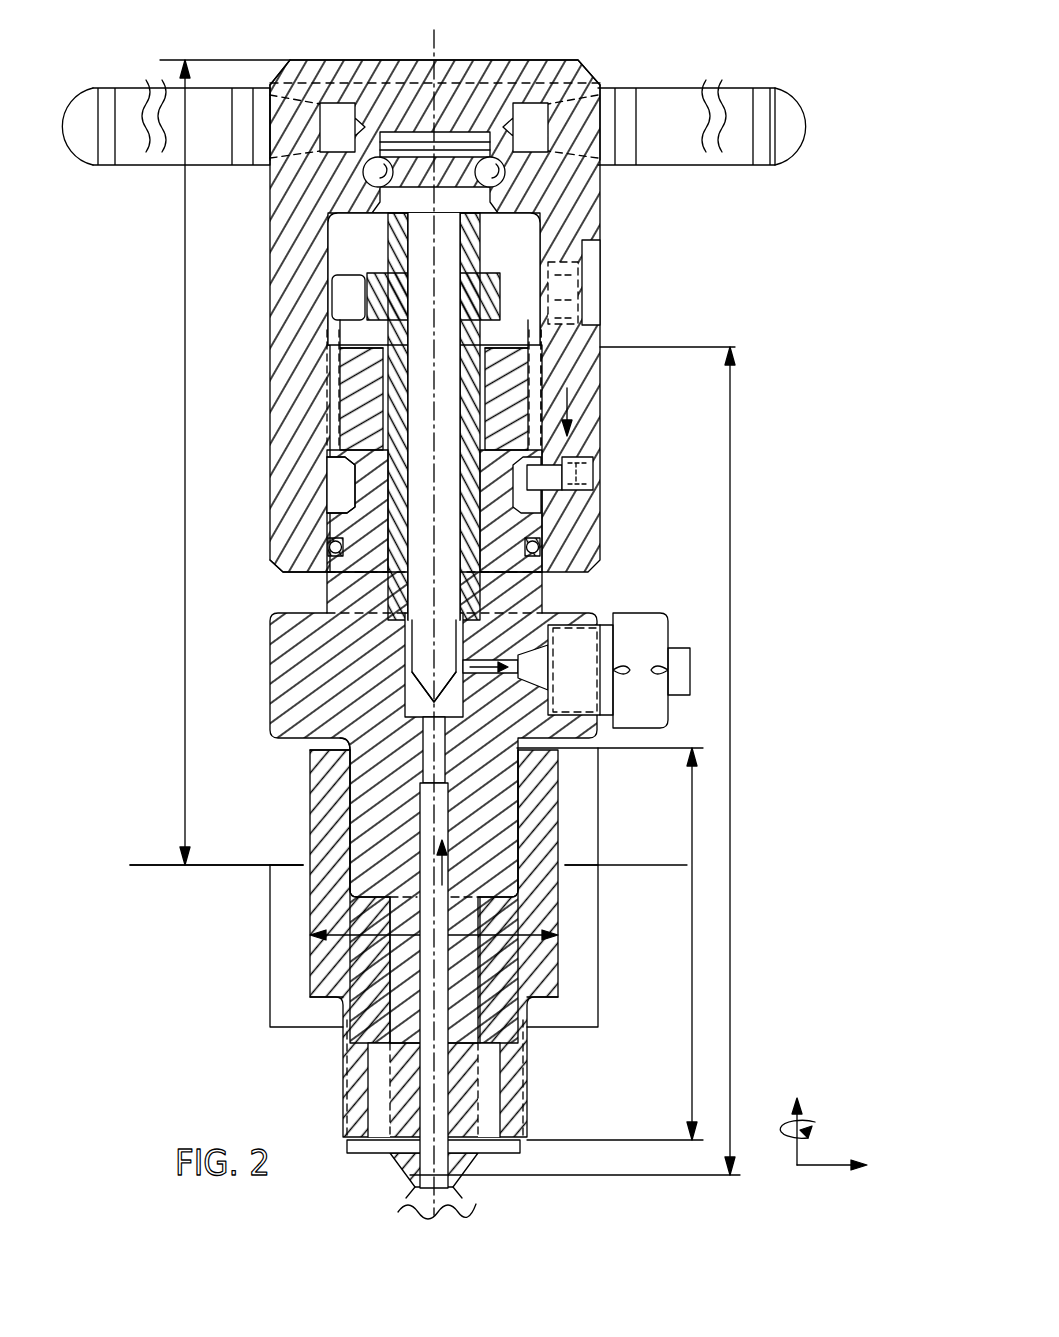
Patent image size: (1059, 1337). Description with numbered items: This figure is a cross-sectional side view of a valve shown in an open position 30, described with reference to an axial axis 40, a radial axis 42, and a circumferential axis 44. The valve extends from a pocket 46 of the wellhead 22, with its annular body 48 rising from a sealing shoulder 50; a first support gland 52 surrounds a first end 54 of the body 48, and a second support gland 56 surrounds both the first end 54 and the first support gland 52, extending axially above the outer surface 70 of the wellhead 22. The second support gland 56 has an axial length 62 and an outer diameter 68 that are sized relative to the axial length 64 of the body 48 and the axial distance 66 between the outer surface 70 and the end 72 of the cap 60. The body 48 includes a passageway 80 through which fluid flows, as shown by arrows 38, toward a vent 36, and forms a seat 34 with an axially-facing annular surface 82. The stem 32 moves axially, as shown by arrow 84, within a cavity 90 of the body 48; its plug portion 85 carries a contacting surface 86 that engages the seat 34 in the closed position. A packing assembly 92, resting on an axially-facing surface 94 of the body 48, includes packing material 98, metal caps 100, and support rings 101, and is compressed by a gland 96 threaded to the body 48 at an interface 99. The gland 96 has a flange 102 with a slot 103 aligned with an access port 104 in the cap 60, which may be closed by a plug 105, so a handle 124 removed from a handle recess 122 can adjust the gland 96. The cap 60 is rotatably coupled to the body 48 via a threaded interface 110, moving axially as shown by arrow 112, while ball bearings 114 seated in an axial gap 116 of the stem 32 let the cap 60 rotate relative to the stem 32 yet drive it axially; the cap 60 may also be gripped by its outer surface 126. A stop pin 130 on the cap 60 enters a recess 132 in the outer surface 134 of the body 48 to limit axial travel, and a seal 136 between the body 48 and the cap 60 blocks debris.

The wellhead 22 is at (228, 979).
The open position 30 is at (362, 722).
The stem 32 is at (400, 432).
The seat 34 is at (337, 750).
The vent 36 is at (616, 720).
The arrows 38 is at (490, 662).
The axial axis 40 is at (798, 1148).
The radial axis 42 is at (825, 1166).
The circumferential axis 44 is at (778, 1140).
The pocket 46 is at (300, 1033).
The body 48 is at (505, 812).
The sealing shoulder 50 is at (370, 1155).
The first support gland 52 is at (490, 1083).
The first end 54 is at (400, 1178).
The second support gland 56 is at (555, 960).
The cap 60 is at (573, 70).
The axial length 62 is at (692, 945).
The axial length 64 is at (730, 760).
The axial distance 66 is at (185, 500).
The outer diameter 68 is at (356, 940).
The outer surface 70 is at (253, 870).
The end 72 is at (303, 62).
The passageway 80 is at (418, 822).
The axially-facing annular surface 82 is at (455, 715).
The arrow 84 is at (428, 262).
The plug portion 85 is at (520, 640).
The contacting surface 86 is at (398, 714).
The cavity 90 is at (345, 678).
The packing assembly 92 is at (349, 584).
The axially-facing surface 94 is at (445, 635).
The gland 96 is at (530, 470).
The packing material 98 is at (330, 560).
The interface 99 is at (372, 382).
The metal caps 100 is at (358, 462).
The support rings 101 is at (495, 515).
The flange 102 is at (352, 252).
The slot 103 is at (350, 287).
The access port 104 is at (597, 252).
The plug 105 is at (578, 275).
The interface 110 is at (550, 376).
The arrow 112 is at (562, 410).
The ball bearings 114 is at (496, 180).
The axial gap 116 is at (413, 160).
The handle recess 122 is at (292, 88).
The handle 124 is at (92, 105).
The outer surface 126 is at (278, 245).
The stop pin 130 is at (595, 480).
The recess 132 is at (345, 495).
The outer surface 134 is at (533, 545).
The seal 136 is at (333, 545).